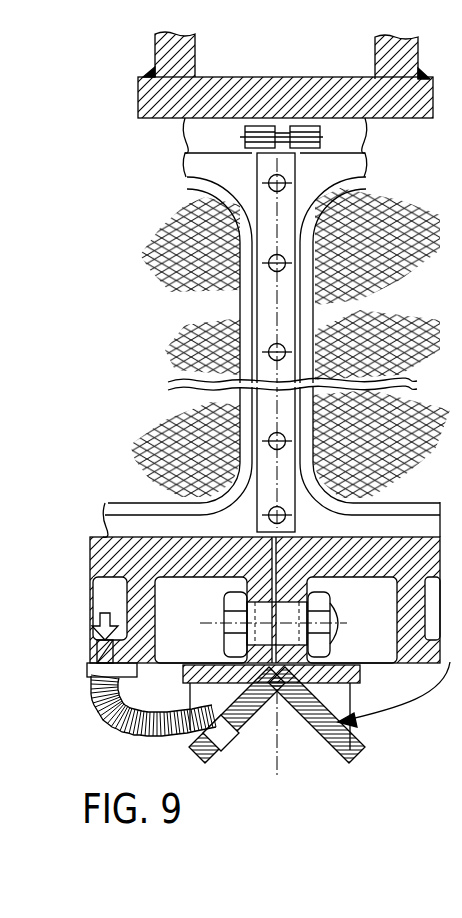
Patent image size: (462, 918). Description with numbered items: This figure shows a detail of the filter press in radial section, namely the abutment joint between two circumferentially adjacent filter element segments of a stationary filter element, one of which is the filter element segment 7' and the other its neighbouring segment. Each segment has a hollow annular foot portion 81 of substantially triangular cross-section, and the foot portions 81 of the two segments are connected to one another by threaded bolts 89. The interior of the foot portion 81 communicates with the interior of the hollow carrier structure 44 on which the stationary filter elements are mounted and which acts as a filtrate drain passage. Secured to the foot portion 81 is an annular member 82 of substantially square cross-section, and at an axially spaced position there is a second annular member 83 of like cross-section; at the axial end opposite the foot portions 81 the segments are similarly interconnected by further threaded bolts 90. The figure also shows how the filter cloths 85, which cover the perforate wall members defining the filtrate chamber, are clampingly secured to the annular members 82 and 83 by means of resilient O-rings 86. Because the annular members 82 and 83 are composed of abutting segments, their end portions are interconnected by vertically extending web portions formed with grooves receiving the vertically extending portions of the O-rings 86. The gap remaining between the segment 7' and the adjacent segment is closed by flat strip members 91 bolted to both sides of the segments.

The second annular member 83 is at (230, 172).
The filter element segment 7' is at (177, 272).
The O-rings 86 is at (247, 126).
The further threaded bolts 90 is at (283, 143).
The filter cloths 85 is at (210, 326).
The flat strip members 91 is at (263, 465).
The annular member 82 is at (167, 526).
The threaded bolts 89 is at (263, 688).
The carrier structure 44 is at (312, 748).
The hollow annular foot portion 81 is at (448, 665).